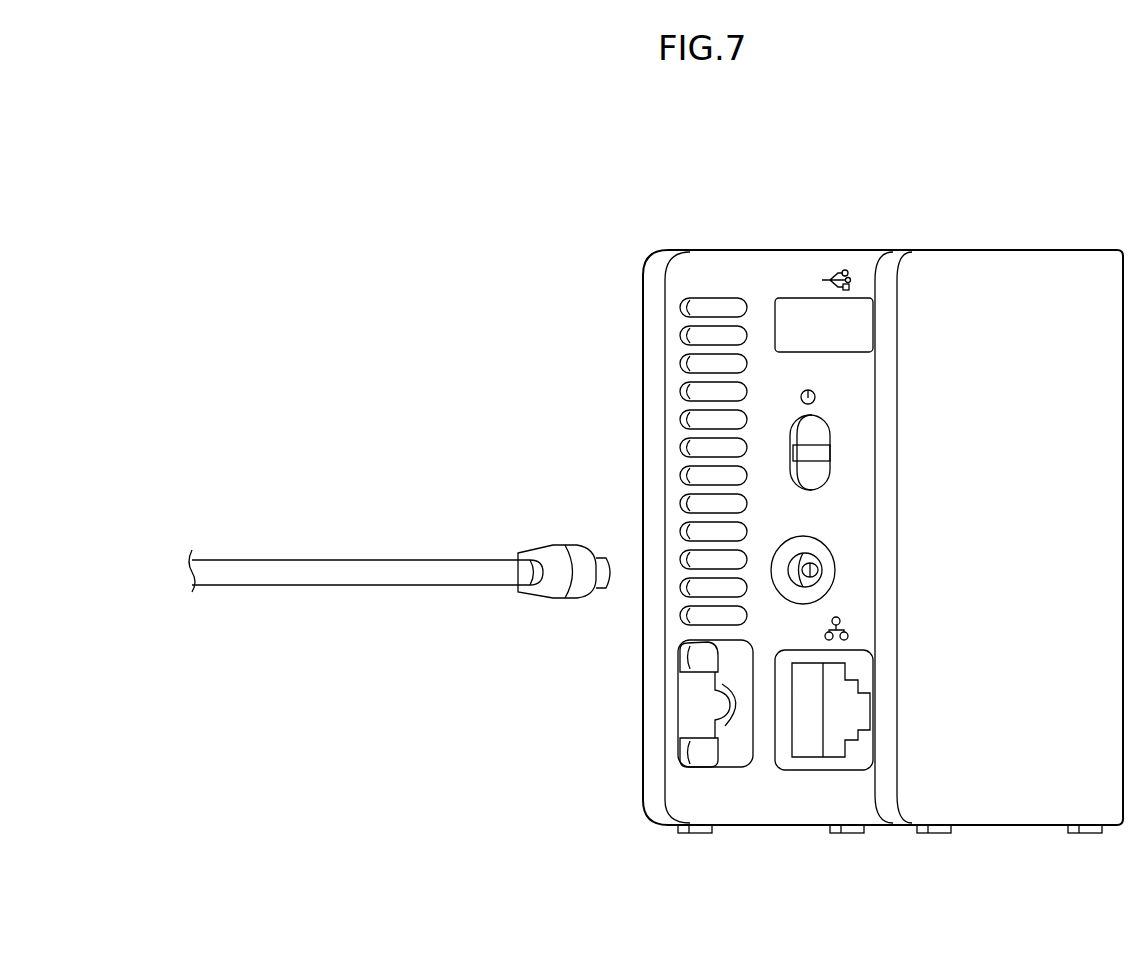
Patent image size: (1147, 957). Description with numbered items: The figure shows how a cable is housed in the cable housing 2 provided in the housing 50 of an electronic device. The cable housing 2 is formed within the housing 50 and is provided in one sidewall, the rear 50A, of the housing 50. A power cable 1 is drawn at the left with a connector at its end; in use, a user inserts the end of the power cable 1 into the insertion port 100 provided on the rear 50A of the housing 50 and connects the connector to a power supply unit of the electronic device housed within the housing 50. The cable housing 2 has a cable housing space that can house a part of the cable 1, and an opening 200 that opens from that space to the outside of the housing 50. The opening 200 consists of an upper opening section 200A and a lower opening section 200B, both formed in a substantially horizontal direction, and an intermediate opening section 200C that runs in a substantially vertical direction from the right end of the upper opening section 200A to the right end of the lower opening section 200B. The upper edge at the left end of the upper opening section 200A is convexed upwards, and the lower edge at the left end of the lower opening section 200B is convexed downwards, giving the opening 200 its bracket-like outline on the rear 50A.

The cable 1 is at (275, 585).
The cable housing 2 is at (718, 778).
The housing 50 is at (907, 217).
The rear 50A is at (740, 268).
The insertion port 100 is at (842, 568).
The opening 200 is at (553, 697).
The upper opening section 200A is at (702, 657).
The lower opening section 200B is at (702, 750).
The intermediate opening section 200C is at (722, 686).